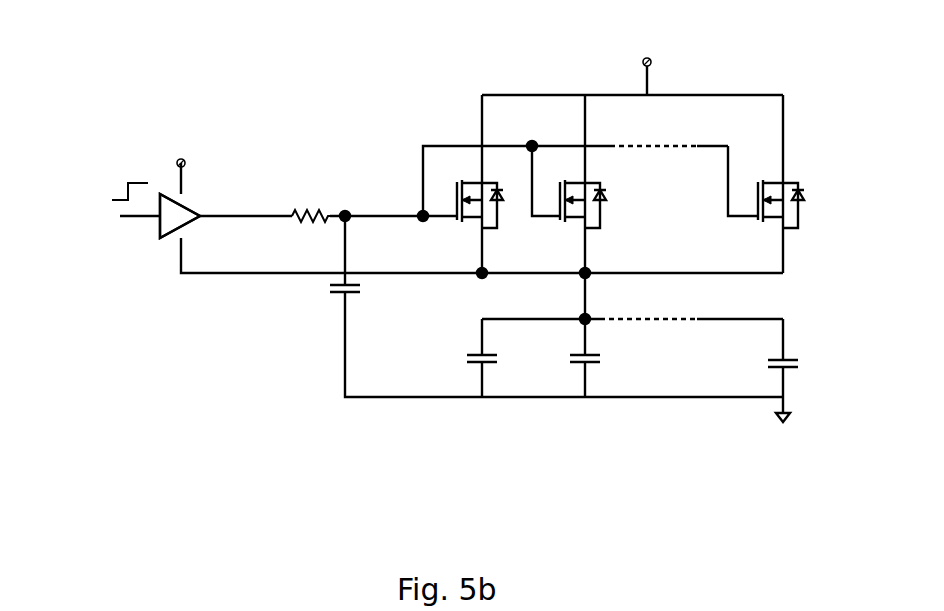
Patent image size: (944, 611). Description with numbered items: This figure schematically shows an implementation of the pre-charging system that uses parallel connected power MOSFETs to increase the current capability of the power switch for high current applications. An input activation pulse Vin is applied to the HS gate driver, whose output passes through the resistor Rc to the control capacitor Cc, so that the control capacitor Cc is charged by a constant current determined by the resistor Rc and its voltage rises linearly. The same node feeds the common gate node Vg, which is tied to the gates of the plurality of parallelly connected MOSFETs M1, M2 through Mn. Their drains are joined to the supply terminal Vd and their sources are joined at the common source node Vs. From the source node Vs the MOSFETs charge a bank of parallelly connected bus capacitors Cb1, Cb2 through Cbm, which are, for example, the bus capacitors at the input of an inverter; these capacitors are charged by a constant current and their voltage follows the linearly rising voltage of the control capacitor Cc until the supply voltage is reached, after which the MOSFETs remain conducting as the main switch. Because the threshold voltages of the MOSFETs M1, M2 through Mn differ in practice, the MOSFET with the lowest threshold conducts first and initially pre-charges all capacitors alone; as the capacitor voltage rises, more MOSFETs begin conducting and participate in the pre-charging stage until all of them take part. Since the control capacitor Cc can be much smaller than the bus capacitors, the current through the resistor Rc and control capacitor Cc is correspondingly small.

The input signal Vin is at (118, 190).
The element HS gate driver is at (197, 203).
The resistor Rc is at (305, 230).
The control capacitor Cc is at (328, 291).
The gate voltage node Vg is at (412, 208).
The drain supply voltage Vd is at (642, 62).
The MOSFET M1 is at (498, 233).
The MOSFET M2 is at (598, 230).
The MOSFET Mn is at (797, 233).
The source voltage node Vs is at (578, 313).
The capacitor Cb1 is at (460, 352).
The capacitor Cb2 is at (565, 352).
The capacitor Cbm is at (762, 358).